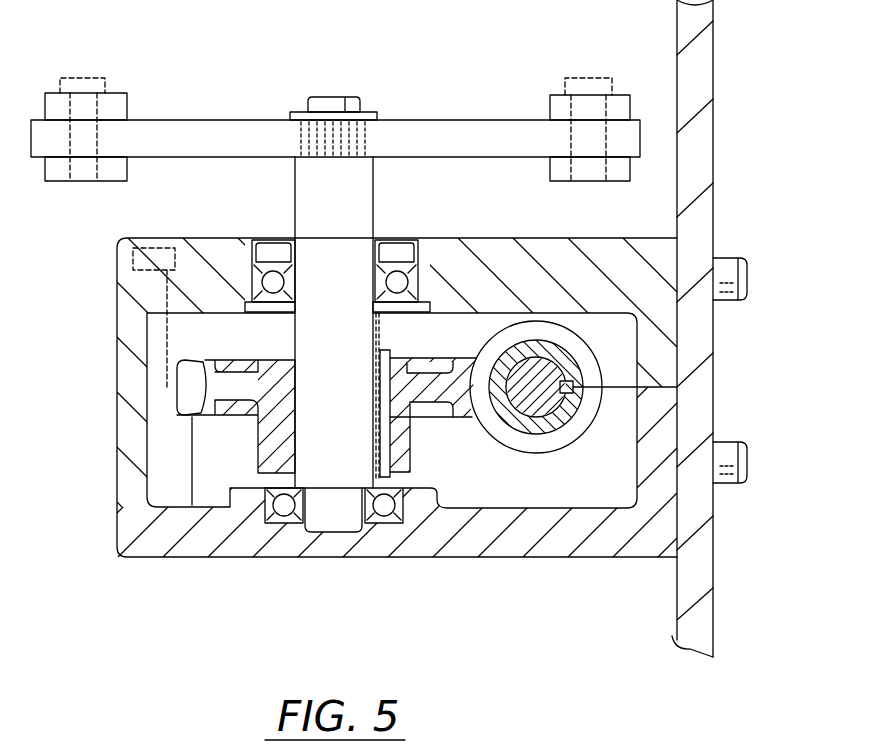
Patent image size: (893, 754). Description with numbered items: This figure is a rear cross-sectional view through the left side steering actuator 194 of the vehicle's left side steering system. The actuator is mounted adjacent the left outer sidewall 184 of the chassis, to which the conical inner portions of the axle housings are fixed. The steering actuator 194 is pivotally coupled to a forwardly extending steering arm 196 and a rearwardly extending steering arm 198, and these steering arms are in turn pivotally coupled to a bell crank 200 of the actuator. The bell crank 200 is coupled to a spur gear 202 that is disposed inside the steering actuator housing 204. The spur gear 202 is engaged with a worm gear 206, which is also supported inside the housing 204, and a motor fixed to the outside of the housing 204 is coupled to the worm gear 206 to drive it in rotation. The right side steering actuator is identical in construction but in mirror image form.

The left outer sidewall 184 is at (714, 140).
The steering actuator 194 is at (111, 588).
The forwardly extending steering arm 196 is at (127, 93).
The rearwardly extending steering arm 198 is at (556, 93).
The bell crank 200 is at (480, 83).
The spur gear 202 is at (178, 390).
The steering actuator housing 204 is at (486, 557).
The worm gear 206 is at (528, 452).